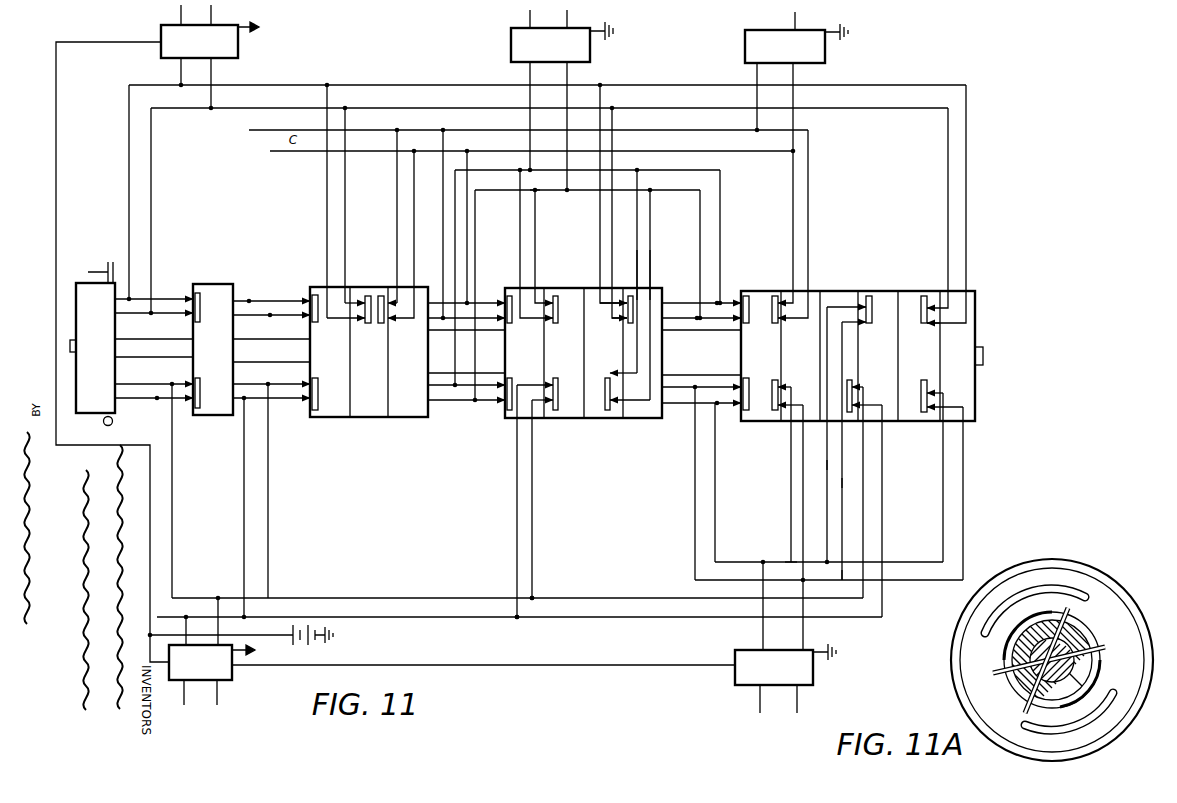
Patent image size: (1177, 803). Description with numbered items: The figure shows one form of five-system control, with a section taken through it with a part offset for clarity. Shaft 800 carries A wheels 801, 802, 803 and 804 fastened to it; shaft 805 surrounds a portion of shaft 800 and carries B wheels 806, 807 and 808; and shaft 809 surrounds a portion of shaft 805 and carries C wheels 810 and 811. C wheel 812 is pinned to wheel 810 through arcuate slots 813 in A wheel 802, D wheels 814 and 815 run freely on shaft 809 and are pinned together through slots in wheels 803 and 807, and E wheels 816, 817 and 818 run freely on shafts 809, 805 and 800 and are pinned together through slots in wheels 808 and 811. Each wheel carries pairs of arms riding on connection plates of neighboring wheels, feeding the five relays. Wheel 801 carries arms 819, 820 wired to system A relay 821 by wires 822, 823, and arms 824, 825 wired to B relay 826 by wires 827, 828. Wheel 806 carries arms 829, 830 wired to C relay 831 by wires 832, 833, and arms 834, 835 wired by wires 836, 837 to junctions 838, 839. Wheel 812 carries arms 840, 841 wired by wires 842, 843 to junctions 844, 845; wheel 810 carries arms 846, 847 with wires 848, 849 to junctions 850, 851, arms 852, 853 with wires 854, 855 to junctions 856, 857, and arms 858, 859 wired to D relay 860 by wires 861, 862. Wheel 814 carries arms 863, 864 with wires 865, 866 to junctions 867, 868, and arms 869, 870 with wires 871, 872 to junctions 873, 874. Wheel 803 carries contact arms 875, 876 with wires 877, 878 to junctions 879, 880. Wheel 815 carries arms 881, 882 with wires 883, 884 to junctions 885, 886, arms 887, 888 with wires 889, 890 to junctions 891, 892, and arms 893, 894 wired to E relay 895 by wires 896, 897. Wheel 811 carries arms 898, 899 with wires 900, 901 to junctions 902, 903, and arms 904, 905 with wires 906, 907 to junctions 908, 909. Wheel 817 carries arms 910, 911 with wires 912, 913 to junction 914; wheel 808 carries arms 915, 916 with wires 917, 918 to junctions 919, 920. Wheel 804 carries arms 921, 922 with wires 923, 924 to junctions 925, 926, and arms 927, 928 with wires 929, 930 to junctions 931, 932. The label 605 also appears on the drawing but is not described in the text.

In FIG. 11, the shaft 800 is at (70, 344).
In FIG. 11A, the shaft 800 is at (1033, 692).
In FIG. 11, the A wheel 801 is at (98, 420).
In FIG. 11, the A wheel 802 is at (392, 417).
In FIG. 11, the A wheel 803 is at (600, 418).
In FIG. 11, the A wheel 804 is at (975, 418).
In FIG. 11, the shaft 805 is at (272, 350).
In FIG. 11A, the shaft 805 is at (1078, 634).
In FIG. 11, the B wheel 806 is at (202, 415).
In FIG. 11, the B wheel 807 is at (553, 418).
In FIG. 11, the B wheel 808 is at (884, 291).
In FIG. 11, the shaft 809 is at (701, 352).
In FIG. 11A, the shaft 809 is at (1025, 680).
In FIG. 11, the C wheel 810 is at (420, 417).
In FIG. 11, the C wheel 811 is at (812, 291).
In FIG. 11, the C wheel 812 is at (352, 417).
In FIG. 11A, the arcuate slots 813 is at (1085, 600).
In FIG. 11, the D wheel 814 is at (529, 353).
In FIG. 11, the D wheel 815 is at (627, 418).
In FIG. 11, the E wheel 816 is at (745, 421).
In FIG. 11, the E wheel 817 is at (850, 291).
In FIG. 11, the E wheel 818 is at (914, 291).
In FIG. 11, the arm 819 is at (160, 299).
In FIG. 11, the arm 820 is at (153, 315).
In FIG. 11, the system A relay 821 is at (161, 30).
In FIG. 11, the wire 822 is at (129, 133).
In FIG. 11, the wire 823 is at (153, 142).
In FIG. 11, the arm 824 is at (152, 383).
In FIG. 11, the arm 825 is at (190, 398).
In FIG. 11, the B relay 826 is at (176, 680).
In FIG. 11, the wire 827 is at (150, 445).
In FIG. 11, the wire 828 is at (172, 472).
In FIG. 11, the arm 829 is at (268, 301).
In FIG. 11, the arm 830 is at (269, 315).
In FIG. 11, the C relay 831 is at (825, 52).
In FIG. 11, the wire 832 is at (676, 132).
In FIG. 11, the wire 833 is at (676, 152).
In FIG. 11, the arm 834 is at (268, 384).
In FIG. 11, the arm 835 is at (292, 406).
In FIG. 11, the wire 836 is at (242, 497).
In FIG. 11, the wire 837 is at (268, 497).
In FIG. 11, the junction 838 is at (192, 606).
In FIG. 11, the junction 839 is at (226, 588).
In FIG. 11, the arm 840 is at (346, 287).
In FIG. 11, the arm 841 is at (332, 324).
In FIG. 11, the wire 842 is at (346, 235).
In FIG. 11, the wire 843 is at (325, 236).
In FIG. 11, the junction 844 is at (211, 110).
In FIG. 11, the junction 845 is at (181, 85).
In FIG. 11, the arm 846 is at (398, 286).
In FIG. 11, the arm 847 is at (404, 322).
In FIG. 11, the wire 848 is at (397, 255).
In FIG. 11, the wire 849 is at (412, 260).
In FIG. 11, the junction 850 is at (404, 121).
In FIG. 11, the junction 851 is at (410, 140).
In FIG. 11, the arm 852 is at (486, 299).
In FIG. 11, the arm 853 is at (472, 314).
In FIG. 11, the wire 854 is at (463, 166).
In FIG. 11, the wire 855 is at (404, 164).
In FIG. 11, the junction 856 is at (466, 151).
In FIG. 11, the junction 857 is at (444, 130).
In FIG. 11, the arm 858 is at (438, 386).
In FIG. 11, the arm 859 is at (440, 404).
In FIG. 11, the D relay 860 is at (590, 55).
In FIG. 11, the wire 861 is at (456, 356).
In FIG. 11, the wire 862 is at (477, 354).
In FIG. 11, the arm 863 is at (535, 292).
In FIG. 11, the arm 864 is at (516, 328).
In FIG. 11, the wire 865 is at (536, 258).
In FIG. 11, the wire 866 is at (519, 258).
In FIG. 11, the junction 867 is at (540, 192).
In FIG. 11, the junction 868 is at (535, 190).
In FIG. 11, the arm 869 is at (524, 391).
In FIG. 11, the arm 870 is at (537, 394).
In FIG. 11, the wire 871 is at (516, 486).
In FIG. 11, the wire 872 is at (534, 498).
In FIG. 11, the junction 873 is at (275, 592).
In FIG. 11, the junction 874 is at (250, 616).
In FIG. 11, the contact arm 875 is at (620, 297).
In FIG. 11, the contact arm 876 is at (594, 328).
In FIG. 11, the wire 877 is at (614, 248).
In FIG. 11, the wire 878 is at (594, 236).
In FIG. 11, the junction 879 is at (346, 110).
In FIG. 11, the junction 880 is at (329, 88).
In FIG. 11, the contact arm 881 is at (634, 381).
In FIG. 11, the contact arm 882 is at (630, 410).
In FIG. 11, the wire 883 is at (638, 253).
In FIG. 11, the wire 884 is at (653, 270).
In FIG. 11, the junction 885 is at (568, 190).
In FIG. 11, the junction 886 is at (533, 168).
In FIG. 11, the contact arm 887 is at (670, 303).
In FIG. 11, the contact arm 888 is at (701, 312).
In FIG. 11, the wire 889 is at (720, 242).
In FIG. 11, the wire 890 is at (698, 240).
In FIG. 11, the junction 891 is at (640, 170).
In FIG. 11, the junction 892 is at (656, 188).
In FIG. 11, the contact arm 893 is at (718, 384).
In FIG. 11, the contact arm 894 is at (728, 402).
In FIG. 11, the E relay 895 is at (813, 678).
In FIG. 11, the wire 896 is at (701, 580).
In FIG. 11, the wire 897 is at (716, 559).
In FIG. 11, the contact arm 898 is at (786, 291).
In FIG. 11, the contact arm 899 is at (804, 318).
In FIG. 11, the wire 900 is at (792, 208).
In FIG. 11, the wire 901 is at (808, 189).
In FIG. 11, the junction 902 is at (791, 154).
In FIG. 11, the junction 903 is at (766, 130).
In FIG. 11, the contact arm 904 is at (793, 387).
In FIG. 11, the contact arm 905 is at (793, 399).
In FIG. 11, the wire 906 is at (791, 470).
In FIG. 11, the wire 907 is at (803, 498).
In FIG. 11, the junction 908 is at (803, 588).
In FIG. 11, the junction 909 is at (778, 555).
In FIG. 11, the arm 910 is at (856, 304).
In FIG. 11, the arm 911 is at (859, 320).
In FIG. 11, the wire 912 is at (829, 460).
In FIG. 11, the wire 913 is at (844, 478).
In FIG. 11, the junction 914 is at (779, 605).
In FIG. 11, the contact arm 915 is at (863, 387).
In FIG. 11, the contact arm 916 is at (869, 505).
In FIG. 11, the wire 917 is at (611, 617).
In FIG. 11, the wire 918 is at (612, 598).
In FIG. 11, the junction 919 is at (516, 618).
In FIG. 11, the junction 920 is at (534, 597).
In FIG. 11, the contact arm 921 is at (948, 291).
In FIG. 11, the contact arm 922 is at (956, 323).
In FIG. 11, the wire 923 is at (912, 108).
In FIG. 11, the wire 924 is at (912, 86).
In FIG. 11, the junction 925 is at (619, 108).
In FIG. 11, the junction 926 is at (602, 88).
In FIG. 11, the contact arm 927 is at (942, 392).
In FIG. 11, the contact arm 928 is at (949, 486).
In FIG. 11, the wire 929 is at (902, 580).
In FIG. 11, the wire 930 is at (893, 562).
In FIG. 11, the junction 931 is at (843, 582).
In FIG. 11, the junction 932 is at (823, 570).
In FIG. 11, the switch arm 605 is at (105, 262).